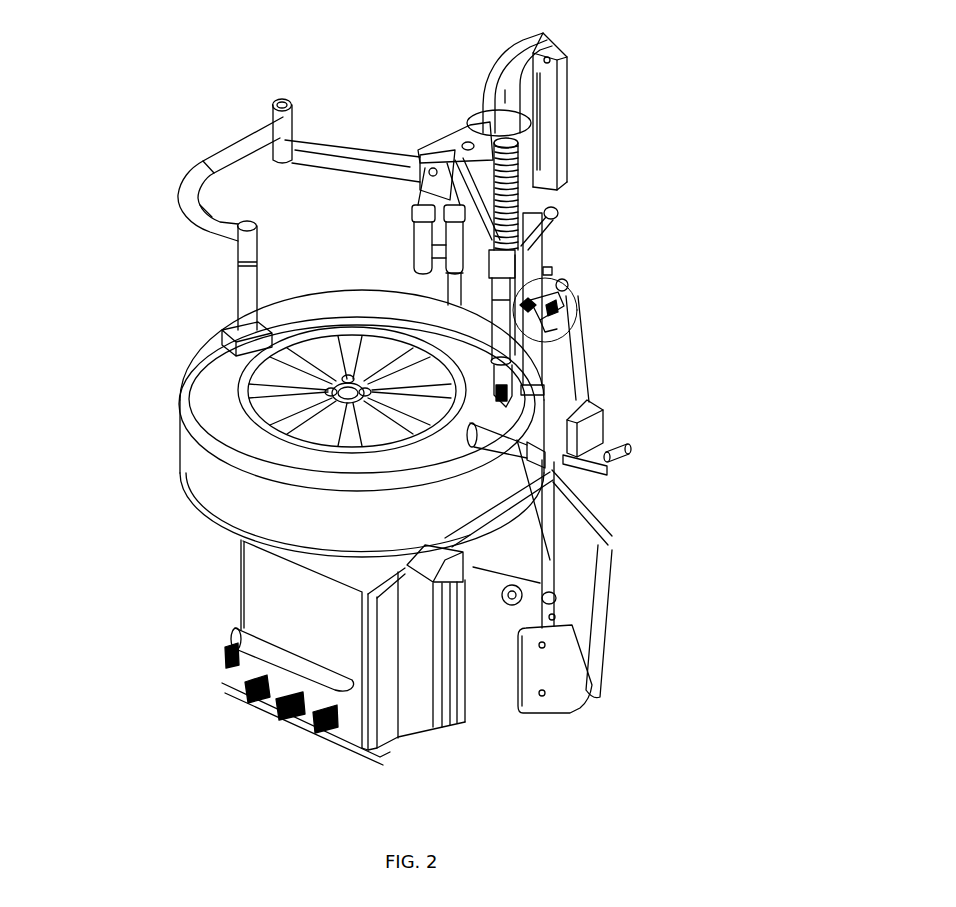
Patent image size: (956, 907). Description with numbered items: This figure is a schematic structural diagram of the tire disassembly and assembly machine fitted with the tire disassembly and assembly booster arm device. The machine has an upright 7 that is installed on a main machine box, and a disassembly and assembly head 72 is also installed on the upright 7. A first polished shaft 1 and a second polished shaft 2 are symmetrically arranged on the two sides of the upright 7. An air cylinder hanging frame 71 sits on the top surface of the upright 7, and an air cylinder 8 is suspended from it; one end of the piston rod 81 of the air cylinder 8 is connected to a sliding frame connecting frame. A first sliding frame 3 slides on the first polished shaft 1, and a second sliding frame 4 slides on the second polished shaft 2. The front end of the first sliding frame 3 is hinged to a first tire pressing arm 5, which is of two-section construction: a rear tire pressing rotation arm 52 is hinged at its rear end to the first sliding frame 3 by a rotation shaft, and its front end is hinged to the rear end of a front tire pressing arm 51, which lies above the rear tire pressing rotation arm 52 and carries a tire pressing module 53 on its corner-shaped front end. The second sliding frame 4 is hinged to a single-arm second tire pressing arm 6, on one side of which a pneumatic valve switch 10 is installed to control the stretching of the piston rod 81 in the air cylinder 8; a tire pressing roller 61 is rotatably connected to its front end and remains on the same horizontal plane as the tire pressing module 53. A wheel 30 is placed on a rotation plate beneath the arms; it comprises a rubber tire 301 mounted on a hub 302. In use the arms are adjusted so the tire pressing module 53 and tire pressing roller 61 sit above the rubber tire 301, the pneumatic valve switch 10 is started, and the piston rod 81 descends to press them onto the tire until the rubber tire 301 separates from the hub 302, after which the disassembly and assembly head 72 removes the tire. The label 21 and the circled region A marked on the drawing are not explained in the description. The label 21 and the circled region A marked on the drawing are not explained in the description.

The first polished shaft 1 is at (470, 298).
The second polished shaft 2 is at (533, 248).
The first sliding frame 3 is at (413, 228).
The second sliding frame 4 is at (575, 288).
The first tire pressing arm 5 is at (260, 123).
The front tire pressing arm 51 is at (228, 140).
The rear tire pressing rotation arm 52 is at (417, 157).
The tire pressing module 53 is at (225, 338).
The second tire pressing arm 6 is at (590, 393).
The tire pressing roller 61 is at (523, 505).
The upright 7 is at (177, 458).
The air cylinder hanging frame 71 is at (492, 63).
The disassembly and assembly head 72 is at (608, 560).
The air cylinder 8 is at (550, 97).
The piston rod 81 is at (557, 163).
The pneumatic valve switch 10 is at (607, 468).
The locking lever 21 is at (547, 213).
The wheel 30 is at (340, 395).
The rubber tire 301 is at (455, 718).
The hub 302 is at (300, 376).
The detail region A is at (565, 330).